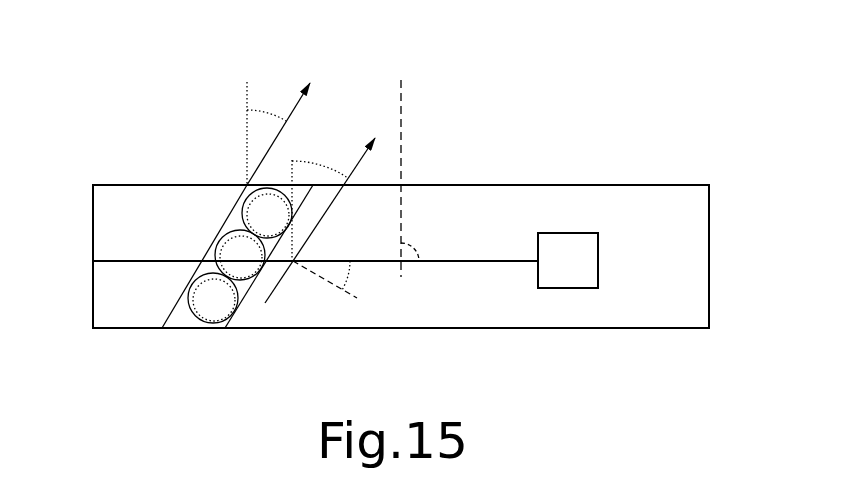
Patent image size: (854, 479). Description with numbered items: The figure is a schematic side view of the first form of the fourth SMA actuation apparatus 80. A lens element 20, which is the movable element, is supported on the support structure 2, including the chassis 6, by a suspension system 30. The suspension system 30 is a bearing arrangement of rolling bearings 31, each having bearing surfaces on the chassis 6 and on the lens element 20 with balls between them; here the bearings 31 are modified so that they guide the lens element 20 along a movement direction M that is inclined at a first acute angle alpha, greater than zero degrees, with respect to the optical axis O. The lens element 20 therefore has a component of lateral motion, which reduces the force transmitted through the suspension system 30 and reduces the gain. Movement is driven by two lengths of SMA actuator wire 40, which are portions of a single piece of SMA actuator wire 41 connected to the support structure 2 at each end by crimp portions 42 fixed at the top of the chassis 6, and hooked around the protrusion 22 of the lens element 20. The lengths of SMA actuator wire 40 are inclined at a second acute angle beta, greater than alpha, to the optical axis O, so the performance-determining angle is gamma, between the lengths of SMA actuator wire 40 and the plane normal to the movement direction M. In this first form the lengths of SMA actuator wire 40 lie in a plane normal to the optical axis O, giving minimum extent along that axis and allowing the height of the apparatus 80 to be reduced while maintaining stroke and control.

The support structure 2 is at (623, 307).
The chassis 6 is at (685, 280).
The lens element 20 is at (148, 205).
The protrusion 22 is at (128, 228).
The suspension system 30 is at (178, 340).
The rolling bearings 31 is at (263, 213).
The lengths of SMA actuator wire 40 is at (477, 261).
The piece of SMA actuator wire 41 is at (388, 261).
The crimp portions 42 is at (583, 252).
The fourth SMA actuation apparatus 80 is at (593, 142).